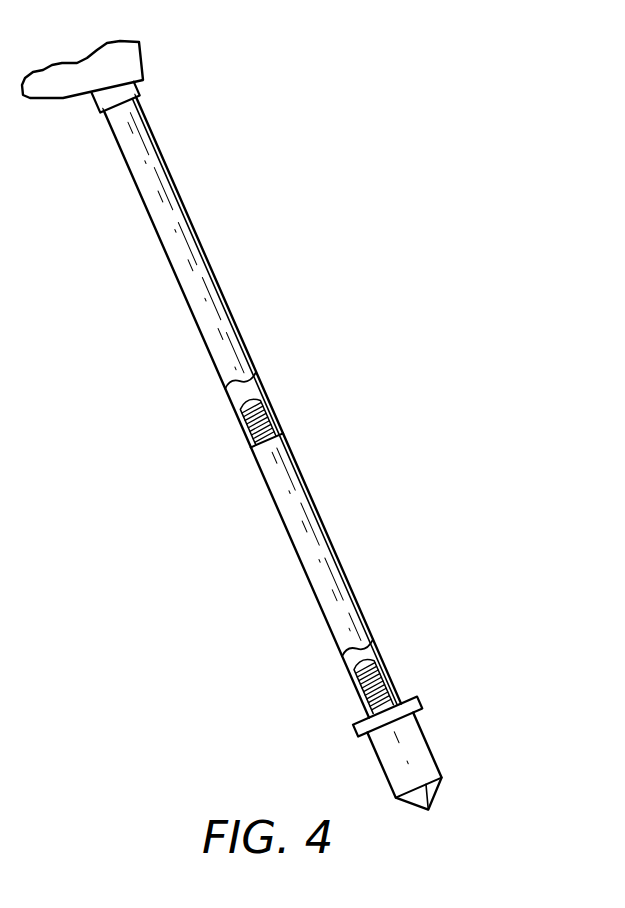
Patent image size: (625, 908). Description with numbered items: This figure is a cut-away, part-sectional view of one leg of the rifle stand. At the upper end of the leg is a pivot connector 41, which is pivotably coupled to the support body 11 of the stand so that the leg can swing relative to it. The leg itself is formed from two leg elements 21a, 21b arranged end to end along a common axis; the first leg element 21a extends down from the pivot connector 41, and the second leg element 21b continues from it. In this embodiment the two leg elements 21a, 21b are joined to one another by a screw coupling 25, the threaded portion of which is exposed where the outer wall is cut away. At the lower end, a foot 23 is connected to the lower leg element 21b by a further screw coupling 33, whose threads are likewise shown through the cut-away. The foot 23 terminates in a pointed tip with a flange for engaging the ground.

The support body 11 is at (147, 45).
The pivot connector 41 is at (140, 79).
The leg element 21a is at (190, 275).
The screw coupling 25 is at (267, 413).
The leg element 21b is at (292, 530).
The screw coupling 33 is at (386, 679).
The foot 23 is at (432, 740).